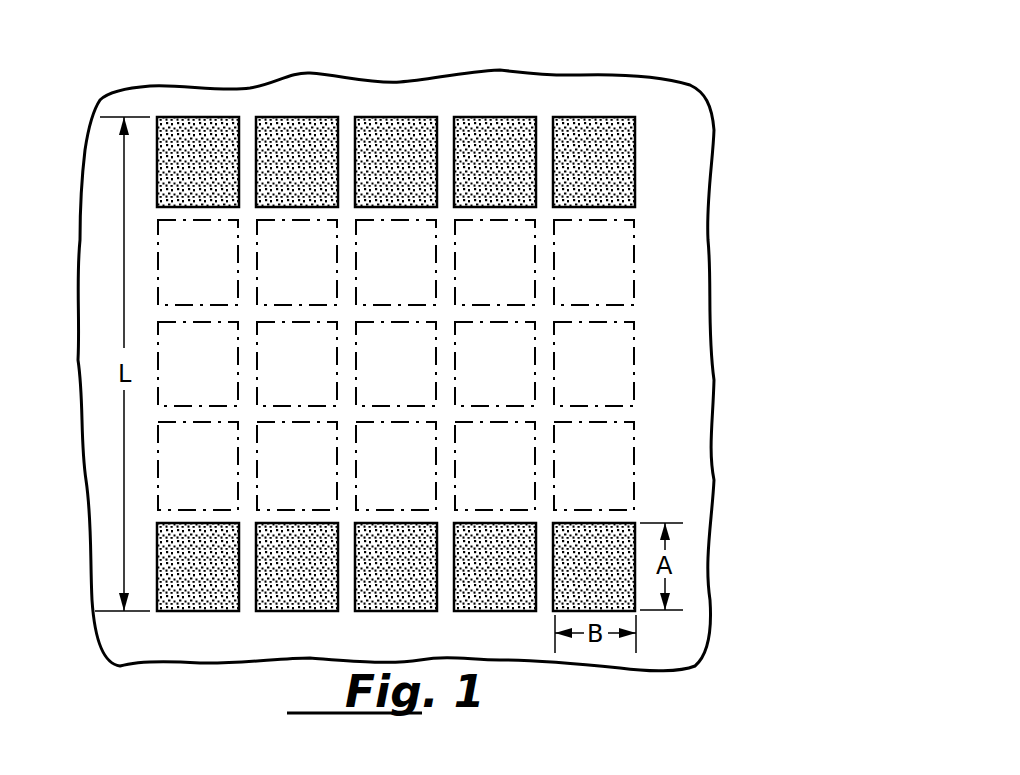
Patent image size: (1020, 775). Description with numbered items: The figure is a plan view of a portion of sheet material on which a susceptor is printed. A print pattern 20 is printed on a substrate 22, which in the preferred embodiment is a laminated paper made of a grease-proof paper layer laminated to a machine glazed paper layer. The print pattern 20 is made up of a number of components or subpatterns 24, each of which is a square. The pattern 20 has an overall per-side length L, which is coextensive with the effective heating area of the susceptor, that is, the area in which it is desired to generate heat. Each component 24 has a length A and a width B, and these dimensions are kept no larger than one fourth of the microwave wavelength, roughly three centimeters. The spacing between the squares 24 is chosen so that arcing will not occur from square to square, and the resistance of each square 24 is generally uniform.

The print pattern 20 is at (672, 129).
The substrate 22 is at (685, 352).
The component 24 is at (632, 180).